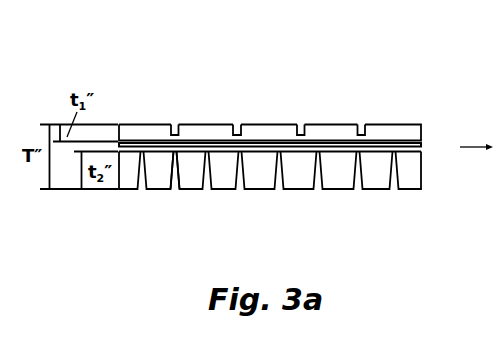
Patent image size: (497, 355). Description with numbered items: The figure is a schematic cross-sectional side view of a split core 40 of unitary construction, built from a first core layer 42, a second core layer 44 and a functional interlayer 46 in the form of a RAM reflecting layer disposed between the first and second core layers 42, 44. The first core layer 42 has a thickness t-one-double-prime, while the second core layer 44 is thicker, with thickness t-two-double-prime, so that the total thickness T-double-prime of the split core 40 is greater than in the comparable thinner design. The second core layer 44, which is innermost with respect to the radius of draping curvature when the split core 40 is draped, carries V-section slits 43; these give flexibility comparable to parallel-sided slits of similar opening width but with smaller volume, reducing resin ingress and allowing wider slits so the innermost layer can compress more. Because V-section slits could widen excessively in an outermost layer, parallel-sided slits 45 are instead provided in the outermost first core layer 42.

The split core 40 is at (264, 99).
The first core layer 42 is at (325, 132).
The V-section slits 43 is at (175, 193).
The second core layer 44 is at (340, 169).
The parallel-sided slits 45 is at (176, 120).
The functional interlayer 46 is at (429, 146).